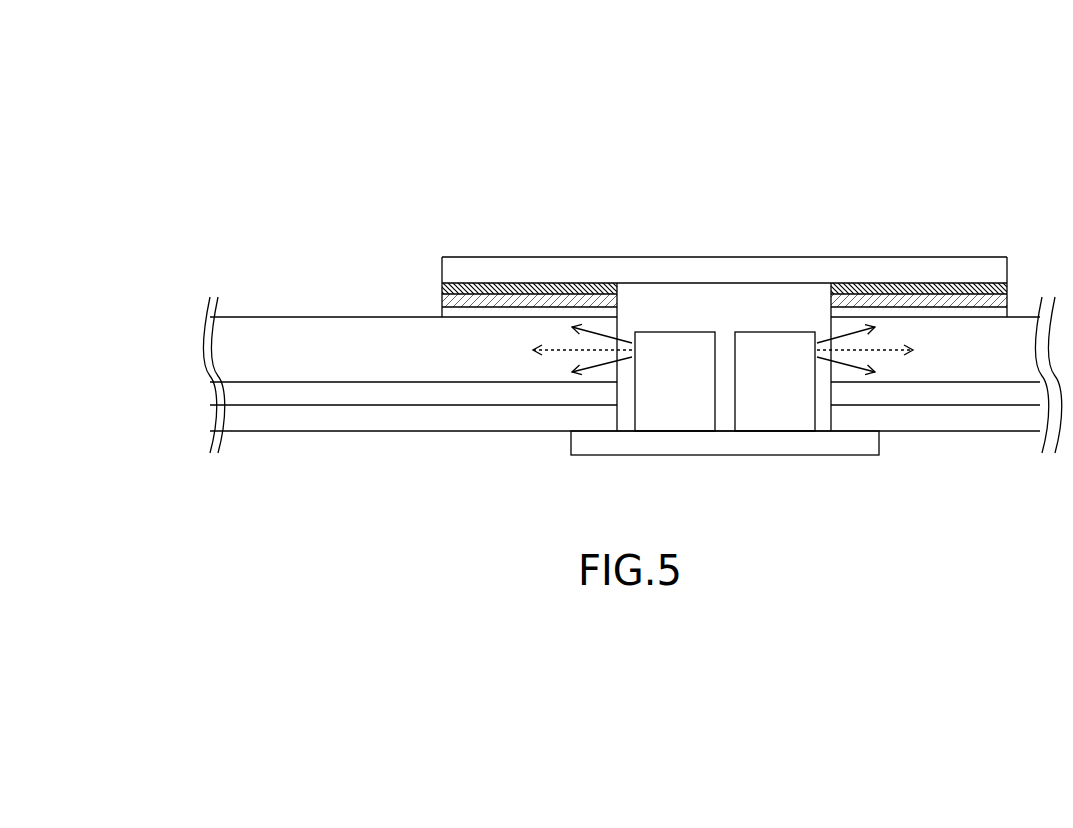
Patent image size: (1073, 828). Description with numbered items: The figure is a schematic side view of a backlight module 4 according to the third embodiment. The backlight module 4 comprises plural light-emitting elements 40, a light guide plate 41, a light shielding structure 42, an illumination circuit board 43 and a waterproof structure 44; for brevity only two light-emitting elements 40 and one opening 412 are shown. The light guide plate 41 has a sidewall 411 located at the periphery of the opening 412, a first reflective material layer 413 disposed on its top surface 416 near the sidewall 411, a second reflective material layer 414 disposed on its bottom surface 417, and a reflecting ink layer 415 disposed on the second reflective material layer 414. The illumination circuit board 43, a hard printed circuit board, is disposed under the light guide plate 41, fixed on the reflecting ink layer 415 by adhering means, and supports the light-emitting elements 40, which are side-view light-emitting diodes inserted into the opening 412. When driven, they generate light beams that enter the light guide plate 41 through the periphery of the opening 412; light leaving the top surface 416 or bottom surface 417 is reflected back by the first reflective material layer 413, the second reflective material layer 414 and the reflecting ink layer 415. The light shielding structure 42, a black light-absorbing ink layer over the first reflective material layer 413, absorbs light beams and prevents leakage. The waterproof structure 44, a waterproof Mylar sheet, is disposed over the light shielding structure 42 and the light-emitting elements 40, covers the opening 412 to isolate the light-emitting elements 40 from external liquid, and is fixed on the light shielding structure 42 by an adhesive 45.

The backlight module 4 is at (332, 193).
The light-emitting element 40 is at (675, 340).
The light guide plate 41 is at (298, 333).
The sidewall 411 is at (617, 370).
The opening 412 is at (768, 297).
The first reflective material layer 413 is at (446, 297).
The second reflective material layer 414 is at (338, 393).
The reflecting ink layer 415 is at (400, 417).
The top surface 416 is at (376, 317).
The bottom surface 417 is at (503, 383).
The light shielding structure 42 is at (500, 288).
The illumination circuit board 43 is at (745, 444).
The waterproof structure 44 is at (915, 270).
The adhesive 45 is at (572, 285).